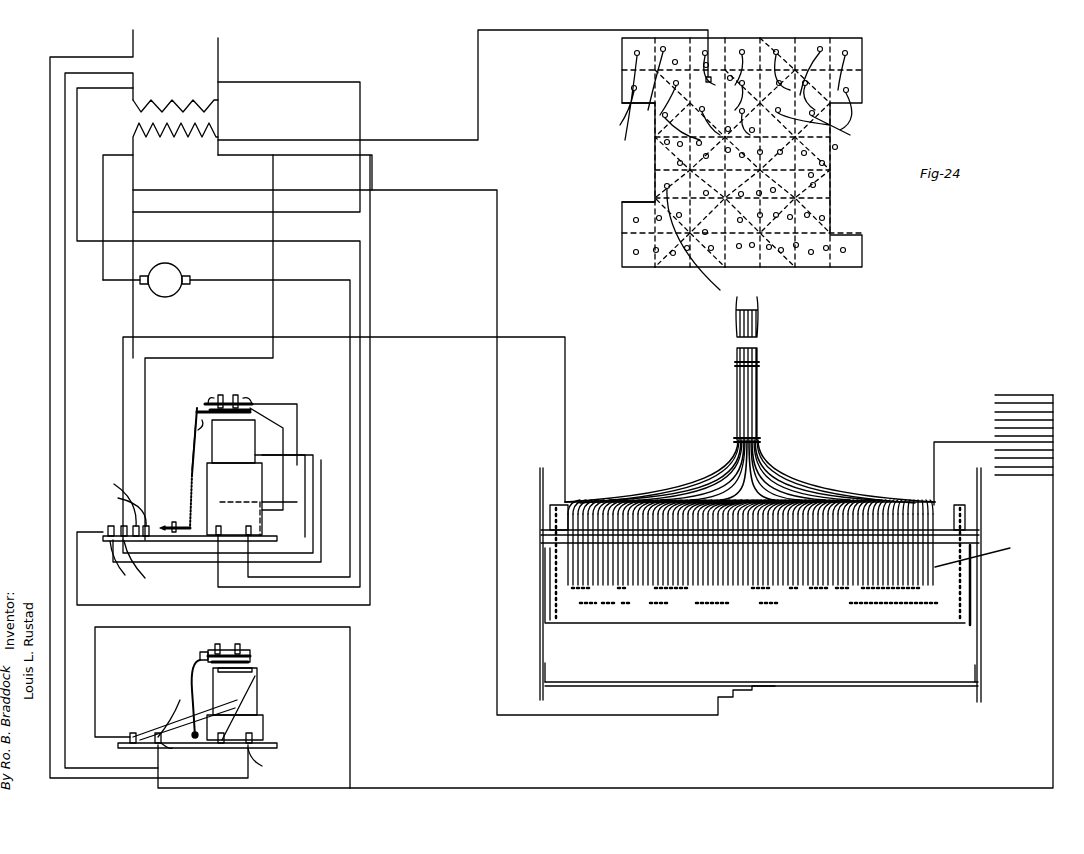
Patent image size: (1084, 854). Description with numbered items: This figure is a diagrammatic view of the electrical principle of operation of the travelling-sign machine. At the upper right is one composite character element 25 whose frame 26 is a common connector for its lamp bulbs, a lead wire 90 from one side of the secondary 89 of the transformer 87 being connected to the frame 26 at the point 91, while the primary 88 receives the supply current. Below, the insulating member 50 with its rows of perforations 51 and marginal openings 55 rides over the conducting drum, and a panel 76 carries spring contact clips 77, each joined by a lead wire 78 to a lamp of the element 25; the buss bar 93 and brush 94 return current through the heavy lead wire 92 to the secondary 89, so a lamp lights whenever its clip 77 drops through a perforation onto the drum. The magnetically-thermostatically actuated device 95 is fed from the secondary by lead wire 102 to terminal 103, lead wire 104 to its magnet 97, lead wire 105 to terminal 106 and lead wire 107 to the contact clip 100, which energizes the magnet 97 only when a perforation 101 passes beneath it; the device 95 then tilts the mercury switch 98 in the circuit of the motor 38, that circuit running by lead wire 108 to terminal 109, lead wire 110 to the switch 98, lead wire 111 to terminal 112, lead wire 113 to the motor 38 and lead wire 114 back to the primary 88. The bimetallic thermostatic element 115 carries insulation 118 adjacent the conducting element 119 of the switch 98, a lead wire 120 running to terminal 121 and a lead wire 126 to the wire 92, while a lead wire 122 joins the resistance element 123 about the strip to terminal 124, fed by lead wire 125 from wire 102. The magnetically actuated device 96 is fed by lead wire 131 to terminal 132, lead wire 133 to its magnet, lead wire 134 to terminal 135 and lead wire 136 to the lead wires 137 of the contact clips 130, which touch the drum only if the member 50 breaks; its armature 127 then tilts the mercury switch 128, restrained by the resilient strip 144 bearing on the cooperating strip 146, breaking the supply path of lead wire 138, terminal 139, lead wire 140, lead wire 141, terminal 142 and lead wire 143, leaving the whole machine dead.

The composite character element or figure 25 is at (862, 86).
The frame 26 is at (622, 84).
The motor 38 is at (172, 268).
The insulating member 50 is at (932, 615).
The series or rows of perforations 51 is at (648, 603).
The openings 55 is at (556, 522).
The panel 76 is at (541, 538).
The spring contact clip 77 is at (840, 590).
The lead wire 78 is at (818, 172).
The transformer 87 is at (196, 116).
The primary 88 is at (170, 100).
The secondary 89 is at (170, 140).
The lead wire 90 is at (410, 140).
The connection of lead wire to frame 91 is at (712, 40).
The lead wire 92 is at (133, 176).
The buss bar 93 is at (810, 690).
The contact element or brush 94 is at (972, 568).
The magnetically-thermostatically actuated device 95 is at (234, 499).
The magnetically actuated device 96 is at (257, 686).
The relay core 97 is at (233, 441).
The mercury switch 98 is at (245, 395).
The contact clip 100 is at (565, 563).
The perforations 101 is at (565, 598).
The lead wire 102 is at (300, 155).
The terminal 103 is at (120, 511).
The lead wire 104 is at (321, 528).
The lead wire 105 is at (313, 476).
The terminal 106 is at (113, 503).
The lead wire 107 is at (214, 337).
The lead wire 108 is at (88, 88).
The terminal 109 is at (238, 518).
The lead wire 110 is at (298, 433).
The lead wire 111 is at (299, 408).
The terminal 112 is at (252, 530).
The lead wire 113 is at (304, 280).
The lead wire 114 is at (292, 82).
The bimetallic thermostatic element 115 is at (192, 458).
The insulation 118 is at (194, 432).
The conducting element 119 is at (200, 404).
The lead wire 120 is at (278, 435).
The terminal 121 is at (190, 562).
The lead wire 122 is at (180, 530).
The resistance element 123 is at (190, 484).
The terminal 124 is at (144, 563).
The lead wire 125 is at (273, 229).
The lead wire 126 is at (103, 313).
The armature 127 is at (226, 672).
The mercury switch 128 is at (250, 648).
The contact clip 130 is at (986, 554).
The lead wire 131 is at (138, 627).
The terminal 132 is at (125, 748).
The lead wire 133 is at (150, 730).
The lead wire 134 is at (174, 698).
The terminal 135 is at (170, 752).
The lead wire 136 is at (158, 788).
The lead wire 137 is at (934, 470).
The lead wire 138 is at (115, 73).
The terminal 139 is at (262, 766).
The lead wire 140 is at (236, 700).
The lead wire 141 is at (263, 721).
The terminal 142 is at (255, 743).
The lead wire 143 is at (85, 56).
The resilient strip or bar 144 is at (192, 668).
The cooperating strip or bar 146 is at (202, 652).